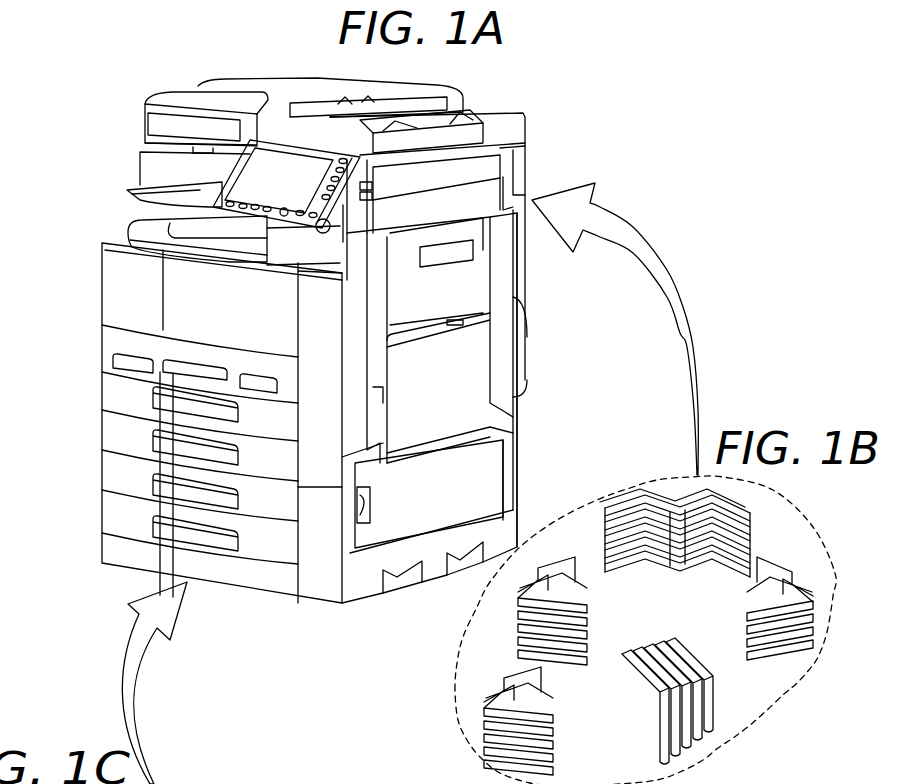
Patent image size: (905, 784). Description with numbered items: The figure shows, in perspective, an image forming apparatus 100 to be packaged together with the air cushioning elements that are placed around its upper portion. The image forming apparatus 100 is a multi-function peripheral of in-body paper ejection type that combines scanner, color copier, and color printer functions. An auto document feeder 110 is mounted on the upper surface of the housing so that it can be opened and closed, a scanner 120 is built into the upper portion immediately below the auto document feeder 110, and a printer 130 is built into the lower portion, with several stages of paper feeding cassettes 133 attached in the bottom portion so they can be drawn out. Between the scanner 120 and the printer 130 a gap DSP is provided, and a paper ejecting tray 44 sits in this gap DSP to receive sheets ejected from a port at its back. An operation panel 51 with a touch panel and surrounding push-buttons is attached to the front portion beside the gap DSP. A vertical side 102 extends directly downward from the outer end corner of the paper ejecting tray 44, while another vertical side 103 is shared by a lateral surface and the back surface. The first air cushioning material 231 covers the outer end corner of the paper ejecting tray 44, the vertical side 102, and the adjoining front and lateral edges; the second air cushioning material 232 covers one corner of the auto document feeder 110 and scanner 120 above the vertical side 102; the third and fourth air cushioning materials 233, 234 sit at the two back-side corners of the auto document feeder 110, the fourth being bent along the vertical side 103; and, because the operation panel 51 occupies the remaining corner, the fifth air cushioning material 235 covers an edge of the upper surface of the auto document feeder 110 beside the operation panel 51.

In FIG. 1A, the image forming apparatus 100 is at (556, 176).
In FIG. 1A, the vertical side 102 is at (102, 297).
In FIG. 1A, the vertical side 103 is at (527, 238).
In FIG. 1A, the auto document feeder 110 is at (172, 125).
In FIG. 1A, the scanner 120 is at (163, 167).
In FIG. 1A, the printer 130 is at (158, 344).
In FIG. 1A, the paper feeding cassettes 133 is at (92, 362).
In FIG. 1A, the paper ejecting tray 44 is at (180, 237).
In FIG. 1A, the operation panel 51 is at (283, 170).
In FIG. 1A, the gap DSP is at (112, 212).
In FIG. 1B, the first air cushioning material 231 is at (486, 720).
In FIG. 1B, the second air cushioning material 232 is at (518, 612).
In FIG. 1B, the third air cushioning material 233 is at (672, 500).
In FIG. 1B, the fourth air cushioning material 234 is at (750, 613).
In FIG. 1B, the fifth air cushioning material 235 is at (660, 696).